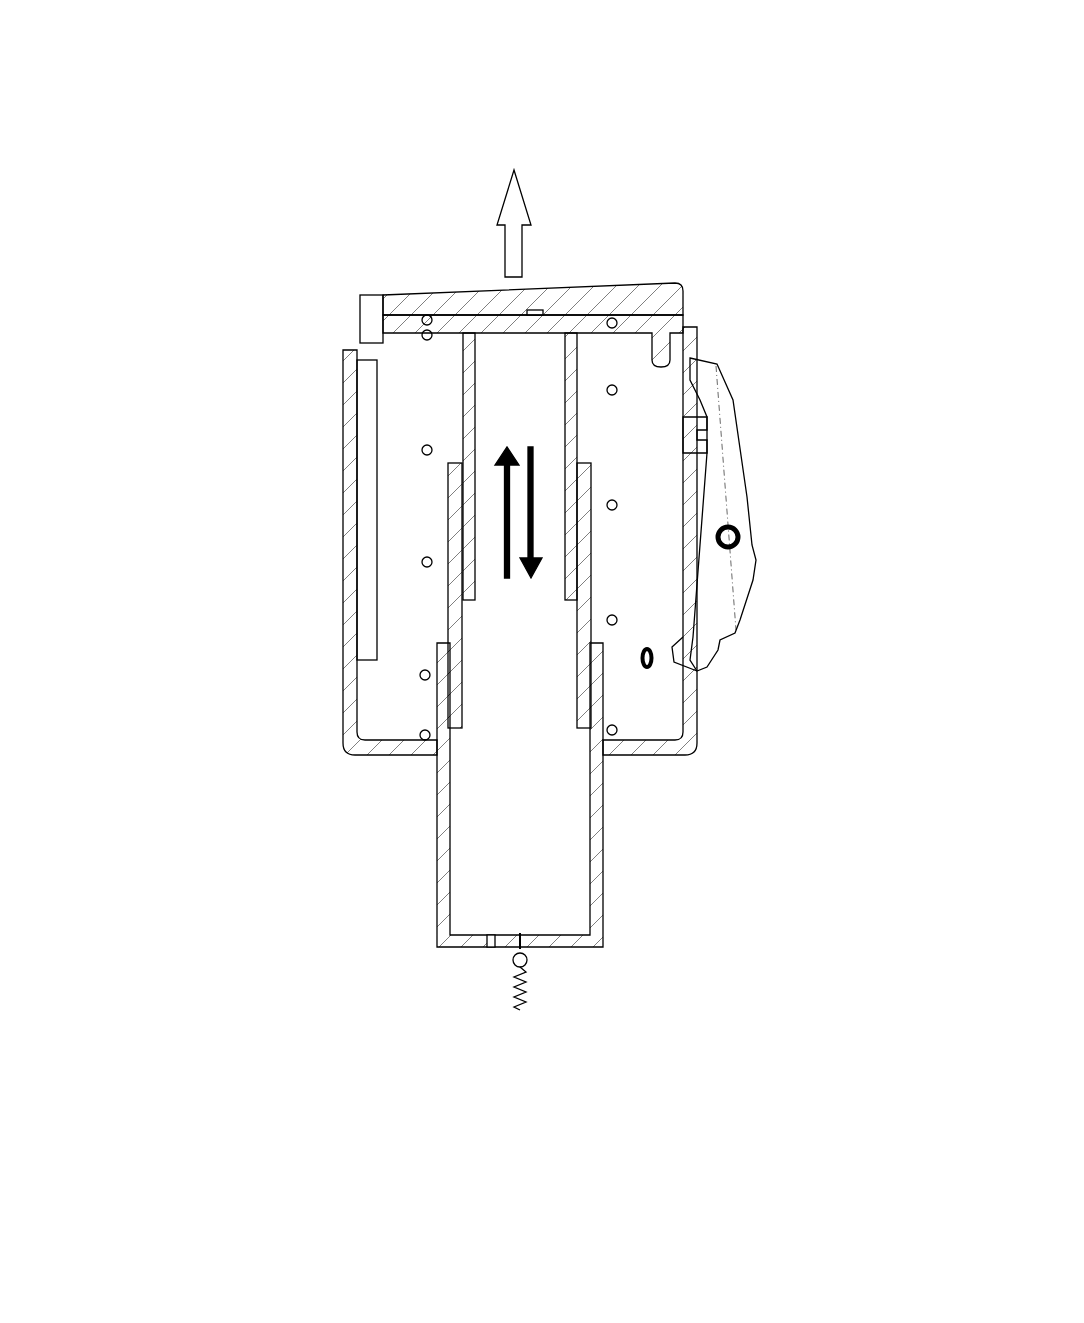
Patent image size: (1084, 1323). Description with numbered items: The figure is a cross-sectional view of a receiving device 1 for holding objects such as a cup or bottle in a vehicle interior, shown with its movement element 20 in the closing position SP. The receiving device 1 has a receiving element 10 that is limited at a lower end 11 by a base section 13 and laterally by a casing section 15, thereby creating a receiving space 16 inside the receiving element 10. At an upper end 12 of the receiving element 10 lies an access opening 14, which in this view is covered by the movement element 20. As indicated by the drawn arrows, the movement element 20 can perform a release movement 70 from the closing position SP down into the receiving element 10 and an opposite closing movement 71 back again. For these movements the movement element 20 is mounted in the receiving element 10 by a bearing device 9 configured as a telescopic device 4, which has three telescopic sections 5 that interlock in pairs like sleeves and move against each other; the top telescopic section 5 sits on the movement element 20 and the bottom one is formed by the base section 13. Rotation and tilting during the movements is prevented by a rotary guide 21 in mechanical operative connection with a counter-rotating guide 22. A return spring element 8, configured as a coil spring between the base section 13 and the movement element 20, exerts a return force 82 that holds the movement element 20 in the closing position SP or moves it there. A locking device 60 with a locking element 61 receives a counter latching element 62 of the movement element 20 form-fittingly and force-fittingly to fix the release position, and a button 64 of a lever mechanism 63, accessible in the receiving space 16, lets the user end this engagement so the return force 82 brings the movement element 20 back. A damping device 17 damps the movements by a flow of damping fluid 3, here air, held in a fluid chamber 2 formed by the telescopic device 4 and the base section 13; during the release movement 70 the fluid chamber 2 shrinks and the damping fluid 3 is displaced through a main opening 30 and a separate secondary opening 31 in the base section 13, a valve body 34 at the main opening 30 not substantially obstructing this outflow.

The receiving device 1 is at (333, 114).
The fluid chamber 2 is at (487, 815).
The damping fluid 3 is at (529, 756).
The telescopic device 4 is at (438, 605).
The telescopic section 5 is at (570, 452).
The return spring element 8 is at (613, 501).
The bearing device 9 is at (421, 595).
The receiving element 10 is at (198, 799).
The lower end 11 is at (426, 945).
The upper end 12 is at (316, 346).
The base section 13 is at (462, 945).
The access opening 14 is at (418, 362).
The casing section 15 is at (348, 480).
The receiving space 16 is at (400, 398).
The damping device 17 is at (509, 1076).
The movement element 20 is at (536, 265).
The closing position SP is at (620, 292).
The rotary guide 21 is at (362, 540).
The counter-rotating guide 22 is at (372, 325).
The main opening 30 is at (525, 945).
The secondary opening 31 is at (490, 947).
The valve body 34 is at (528, 978).
The locking device 60 is at (810, 515).
The locking element 61 is at (666, 658).
The counter latching element 62 is at (668, 362).
The lever mechanism 63 is at (727, 480).
The button 64 is at (687, 387).
The release movement 70 is at (525, 503).
The closing movement 71 is at (507, 476).
The return force 82 is at (514, 250).